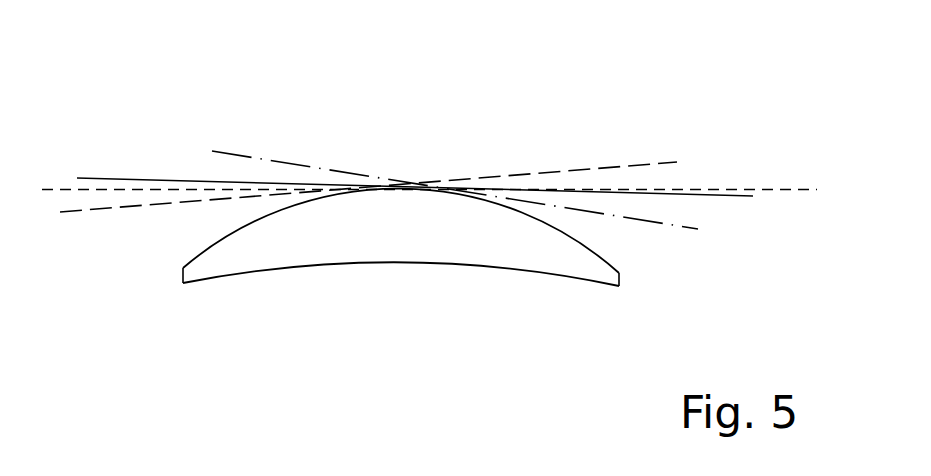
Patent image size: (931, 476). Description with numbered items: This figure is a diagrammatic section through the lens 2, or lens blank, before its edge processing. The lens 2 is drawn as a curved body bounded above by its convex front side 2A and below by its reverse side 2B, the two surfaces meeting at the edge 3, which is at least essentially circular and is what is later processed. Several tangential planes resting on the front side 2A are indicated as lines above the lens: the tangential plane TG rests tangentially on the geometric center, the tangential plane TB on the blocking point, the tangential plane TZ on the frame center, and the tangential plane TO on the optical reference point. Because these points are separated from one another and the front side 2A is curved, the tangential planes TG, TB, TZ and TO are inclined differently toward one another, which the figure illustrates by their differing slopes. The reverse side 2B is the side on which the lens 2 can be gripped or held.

The lens 2 is at (443, 203).
The front side 2A is at (501, 202).
The reverse side 2B is at (488, 266).
The edge 3 is at (620, 276).
The tangential plane TZ is at (110, 178).
The tangential plane TB is at (223, 152).
The tangential plane TO is at (572, 171).
The tangential plane TG is at (792, 189).